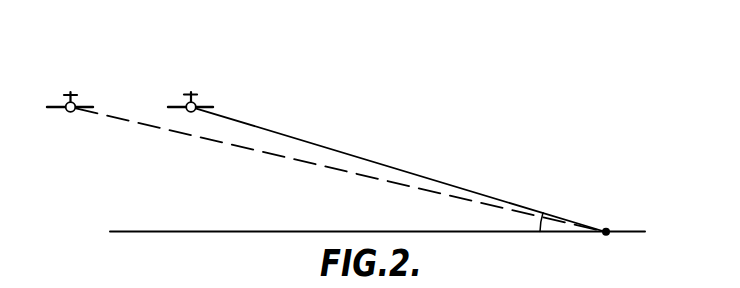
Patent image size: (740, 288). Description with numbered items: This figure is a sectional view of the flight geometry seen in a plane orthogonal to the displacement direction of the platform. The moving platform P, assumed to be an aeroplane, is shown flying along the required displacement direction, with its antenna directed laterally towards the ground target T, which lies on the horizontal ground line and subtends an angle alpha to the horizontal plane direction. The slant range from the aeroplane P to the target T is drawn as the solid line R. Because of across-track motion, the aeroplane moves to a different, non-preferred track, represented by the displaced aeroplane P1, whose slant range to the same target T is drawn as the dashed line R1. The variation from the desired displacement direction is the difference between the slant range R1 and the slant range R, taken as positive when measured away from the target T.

The moving platform P is at (205, 104).
The aeroplane on non-preferred track P1 is at (82, 101).
The slant range R is at (428, 177).
The slant range from displaced aeroplane R1 is at (307, 166).
The ground target T is at (605, 228).